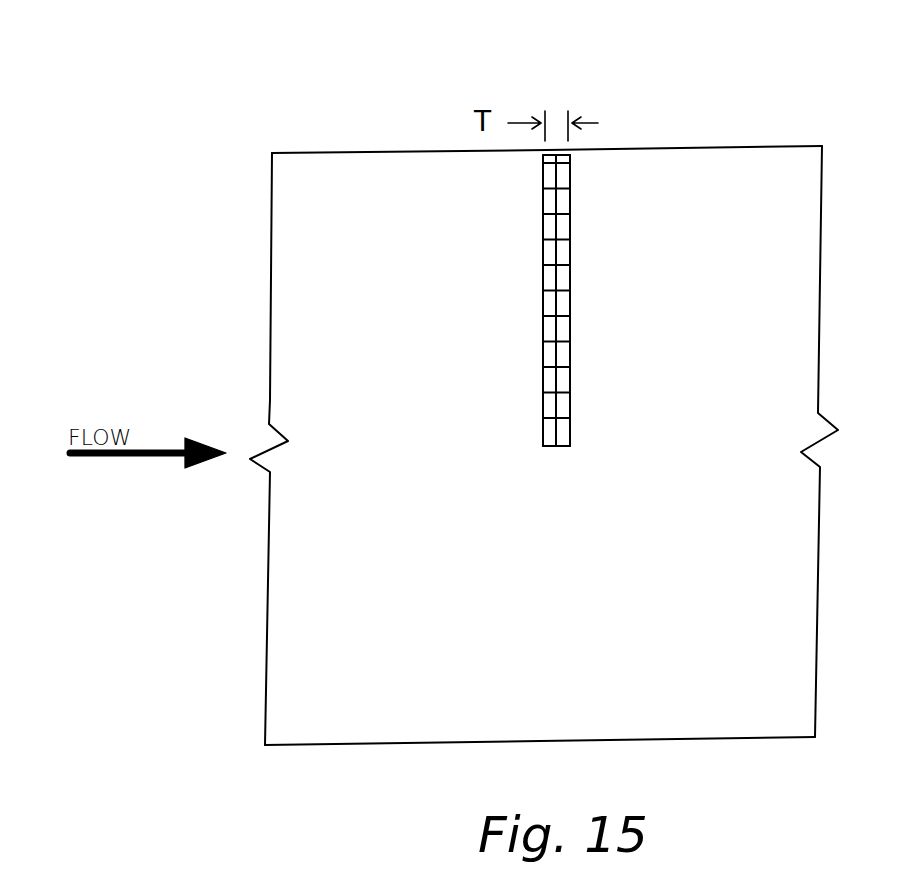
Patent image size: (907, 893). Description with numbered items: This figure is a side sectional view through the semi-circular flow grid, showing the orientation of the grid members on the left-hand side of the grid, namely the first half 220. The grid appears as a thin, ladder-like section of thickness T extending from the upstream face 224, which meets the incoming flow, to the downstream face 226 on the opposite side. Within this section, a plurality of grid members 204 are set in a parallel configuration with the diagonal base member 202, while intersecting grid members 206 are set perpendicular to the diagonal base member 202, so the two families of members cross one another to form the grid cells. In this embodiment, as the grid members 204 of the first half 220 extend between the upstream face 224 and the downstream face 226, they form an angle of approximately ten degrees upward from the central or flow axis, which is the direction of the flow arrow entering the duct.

The first half 220 is at (632, 278).
The upstream face 224 is at (532, 317).
The downstream face 226 is at (585, 317).
The grid members 204 is at (535, 420).
The intersecting grid members 206 is at (558, 403).
The diagonal base member 202 is at (568, 448).